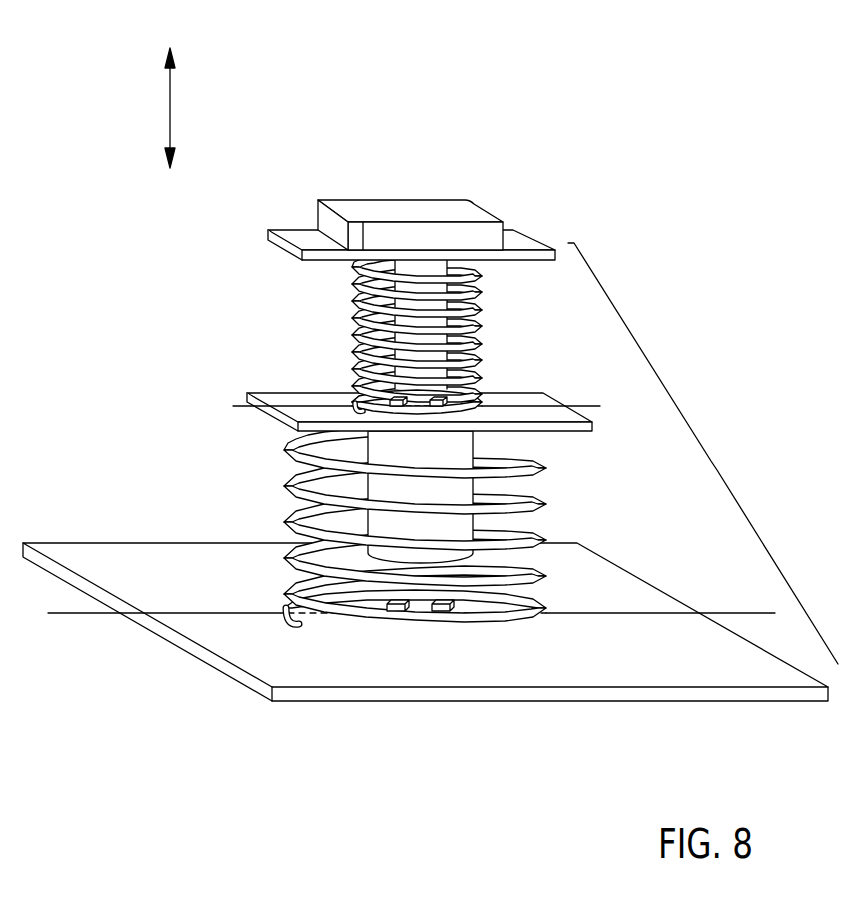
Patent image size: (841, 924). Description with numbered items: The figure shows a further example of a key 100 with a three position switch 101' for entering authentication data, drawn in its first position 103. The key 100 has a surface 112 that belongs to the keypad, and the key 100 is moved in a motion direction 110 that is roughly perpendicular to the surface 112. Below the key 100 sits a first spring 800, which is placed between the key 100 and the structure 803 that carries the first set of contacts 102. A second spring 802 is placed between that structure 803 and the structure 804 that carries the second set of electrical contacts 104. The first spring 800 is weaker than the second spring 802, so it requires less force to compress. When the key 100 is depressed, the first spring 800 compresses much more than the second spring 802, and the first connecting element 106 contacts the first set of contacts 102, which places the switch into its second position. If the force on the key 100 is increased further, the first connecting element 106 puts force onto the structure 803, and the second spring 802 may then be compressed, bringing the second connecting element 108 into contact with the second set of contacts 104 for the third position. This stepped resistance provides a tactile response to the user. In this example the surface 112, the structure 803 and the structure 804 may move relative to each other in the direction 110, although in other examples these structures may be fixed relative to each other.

The key 100 is at (447, 212).
The three position switch 101' is at (703, 453).
The first set of contacts 102 is at (388, 400).
The first position 103 is at (572, 138).
The second set of electrical contacts 104 is at (403, 613).
The first connecting element 106 is at (427, 312).
The second connecting element 108 is at (457, 527).
The motion direction 110 is at (168, 108).
The surface 112 is at (303, 237).
The first spring 800 is at (396, 332).
The second spring 802 is at (393, 526).
The structure with the first set of contacts 803 is at (278, 400).
The structure with the second set of contacts 804 is at (117, 567).